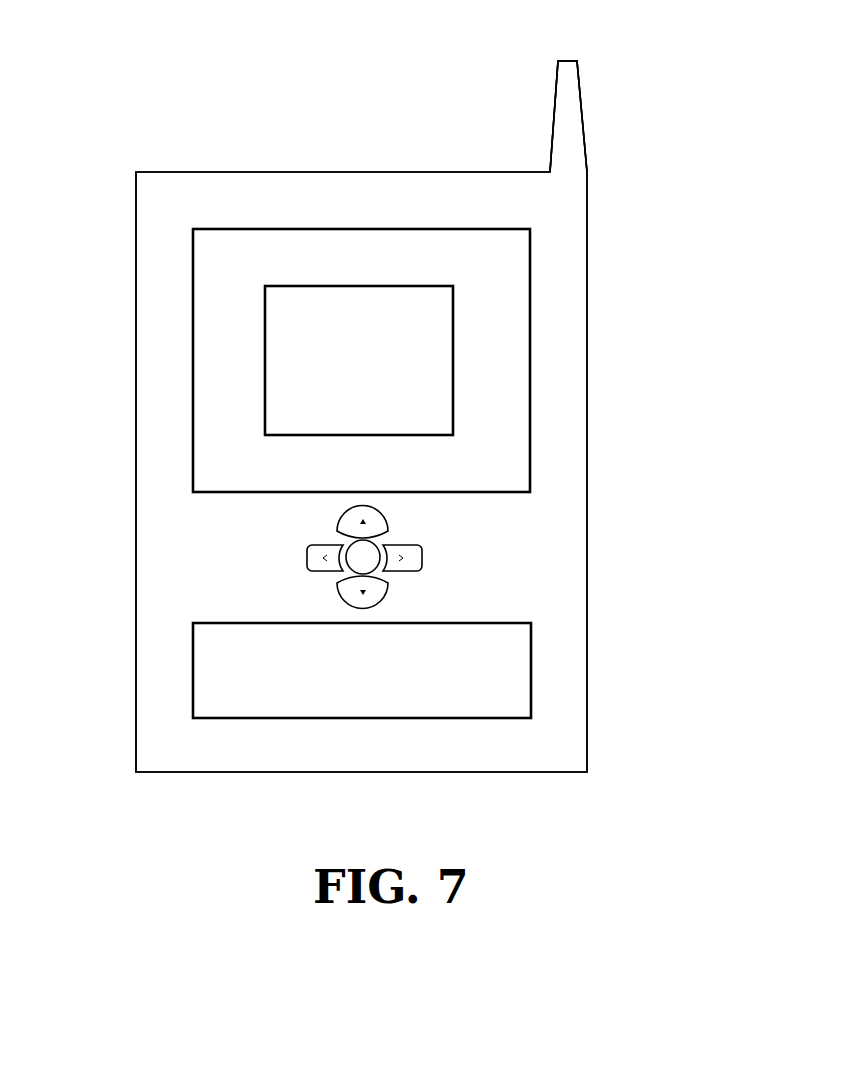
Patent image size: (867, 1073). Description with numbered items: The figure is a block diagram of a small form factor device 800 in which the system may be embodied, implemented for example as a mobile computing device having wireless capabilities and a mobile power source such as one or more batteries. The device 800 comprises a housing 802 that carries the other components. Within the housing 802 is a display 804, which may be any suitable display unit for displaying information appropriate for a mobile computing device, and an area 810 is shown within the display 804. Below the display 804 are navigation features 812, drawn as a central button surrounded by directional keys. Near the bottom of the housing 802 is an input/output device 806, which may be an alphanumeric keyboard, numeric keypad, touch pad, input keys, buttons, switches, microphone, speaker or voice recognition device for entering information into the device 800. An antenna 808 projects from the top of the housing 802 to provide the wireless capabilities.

The small form factor device 800 is at (150, 73).
The housing 802 is at (587, 474).
The display 804 is at (530, 247).
The input/output (I/O) device 806 is at (531, 660).
The antenna 808 is at (552, 108).
The displayed window 810 is at (453, 378).
The navigation features 812 is at (446, 546).